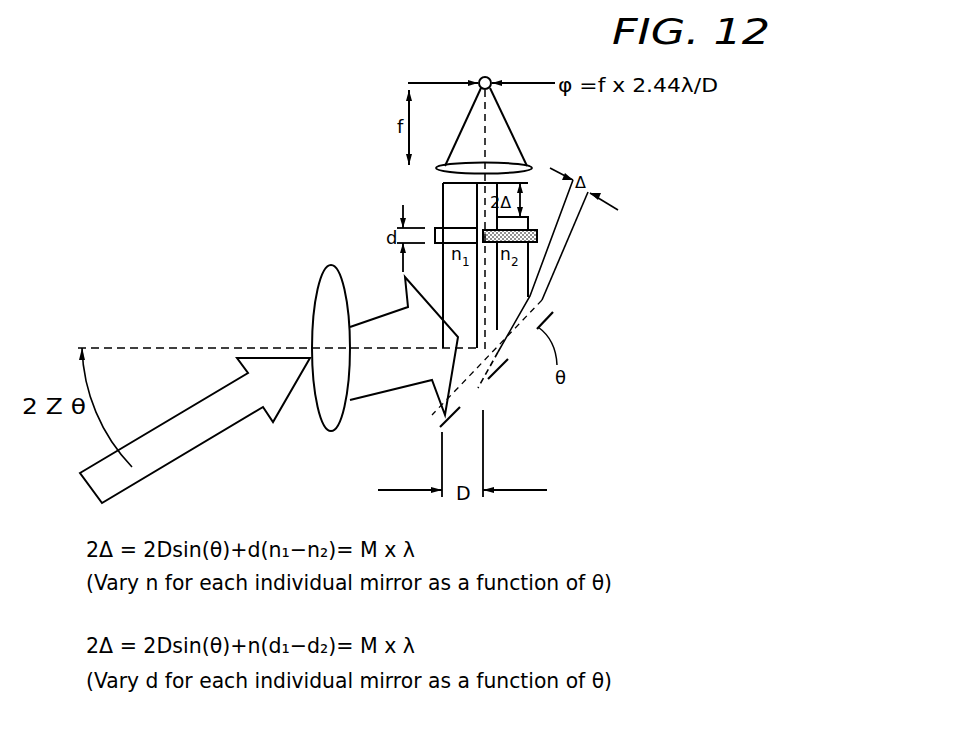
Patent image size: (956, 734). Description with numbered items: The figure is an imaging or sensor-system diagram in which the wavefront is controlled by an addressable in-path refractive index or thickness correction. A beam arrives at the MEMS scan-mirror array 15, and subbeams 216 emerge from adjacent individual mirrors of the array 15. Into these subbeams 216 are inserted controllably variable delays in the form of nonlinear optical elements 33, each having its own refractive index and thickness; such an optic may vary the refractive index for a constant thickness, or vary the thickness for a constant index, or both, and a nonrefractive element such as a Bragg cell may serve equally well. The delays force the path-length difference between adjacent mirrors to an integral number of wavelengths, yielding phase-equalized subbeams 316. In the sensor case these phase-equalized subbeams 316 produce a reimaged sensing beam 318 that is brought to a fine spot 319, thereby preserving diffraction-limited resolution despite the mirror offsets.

The MEMS scan-mirror array 15 is at (546, 311).
The subbeams 216 is at (525, 295).
The phase-equalized subbeams 316 is at (469, 192).
The reimaged sensing beam 318 is at (499, 130).
The fine spot 319 is at (491, 78).
The nonlinear optical element 33 is at (490, 236).